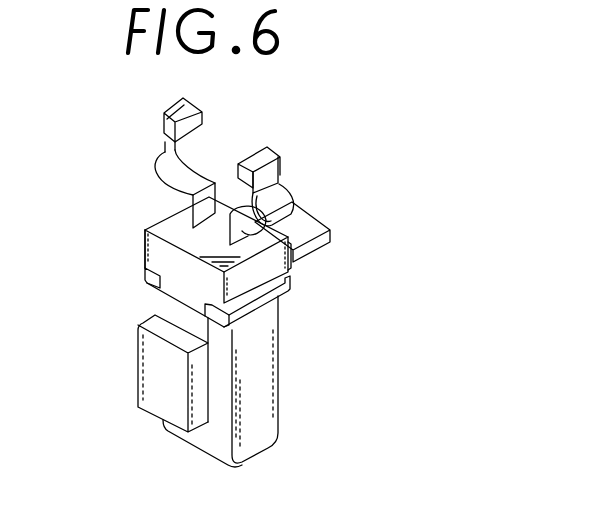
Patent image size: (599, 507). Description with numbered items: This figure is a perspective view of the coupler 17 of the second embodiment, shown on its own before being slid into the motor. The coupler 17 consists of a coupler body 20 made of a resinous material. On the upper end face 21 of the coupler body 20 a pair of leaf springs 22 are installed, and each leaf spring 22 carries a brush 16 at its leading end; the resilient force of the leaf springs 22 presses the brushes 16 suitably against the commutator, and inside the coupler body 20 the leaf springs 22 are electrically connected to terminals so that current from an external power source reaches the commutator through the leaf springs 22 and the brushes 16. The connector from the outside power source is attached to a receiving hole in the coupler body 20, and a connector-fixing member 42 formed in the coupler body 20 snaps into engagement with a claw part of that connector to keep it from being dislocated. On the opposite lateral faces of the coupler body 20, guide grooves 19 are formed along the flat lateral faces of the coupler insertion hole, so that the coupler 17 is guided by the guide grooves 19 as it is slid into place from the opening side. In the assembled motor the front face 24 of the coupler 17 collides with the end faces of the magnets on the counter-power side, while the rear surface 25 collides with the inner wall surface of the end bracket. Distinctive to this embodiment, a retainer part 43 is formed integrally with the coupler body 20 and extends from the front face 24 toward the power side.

The brush 16 is at (252, 158).
The coupler 17 is at (341, 375).
The guide groove 19 is at (148, 273).
The coupler body 20 is at (270, 429).
The upper end face 21 is at (161, 228).
The leaf spring 22 is at (158, 157).
The front face 24 is at (303, 248).
The rear surface 25 is at (146, 245).
The connector-fixing member 42 is at (150, 403).
The retainer part 43 is at (313, 225).